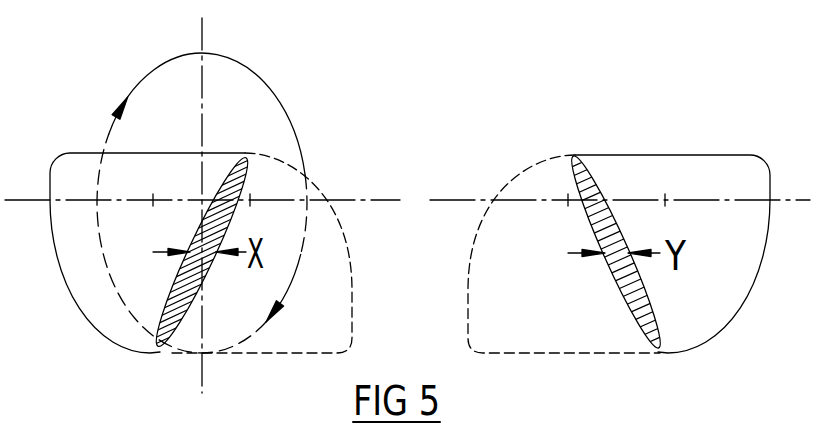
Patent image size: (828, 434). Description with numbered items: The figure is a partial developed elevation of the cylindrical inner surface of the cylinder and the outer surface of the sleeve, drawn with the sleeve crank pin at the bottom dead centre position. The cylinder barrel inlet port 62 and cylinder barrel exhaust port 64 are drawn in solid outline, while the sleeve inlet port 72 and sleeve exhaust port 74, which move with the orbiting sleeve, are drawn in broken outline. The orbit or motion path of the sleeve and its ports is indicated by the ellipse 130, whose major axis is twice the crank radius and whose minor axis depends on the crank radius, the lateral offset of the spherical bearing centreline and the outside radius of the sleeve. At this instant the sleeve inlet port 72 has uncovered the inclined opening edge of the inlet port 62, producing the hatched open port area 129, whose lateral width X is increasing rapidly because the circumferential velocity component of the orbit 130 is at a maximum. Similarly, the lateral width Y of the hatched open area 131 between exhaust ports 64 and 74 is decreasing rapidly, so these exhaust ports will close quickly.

The cylinder barrel inlet port 62 is at (73, 151).
The cylinder barrel exhaust port 64 is at (720, 155).
The sleeve inlet port 72 is at (320, 188).
The sleeve exhaust port 74 is at (507, 183).
The open port area 129 is at (163, 308).
The sleeve orbit ellipse 130 is at (246, 65).
The open area 131 is at (650, 314).